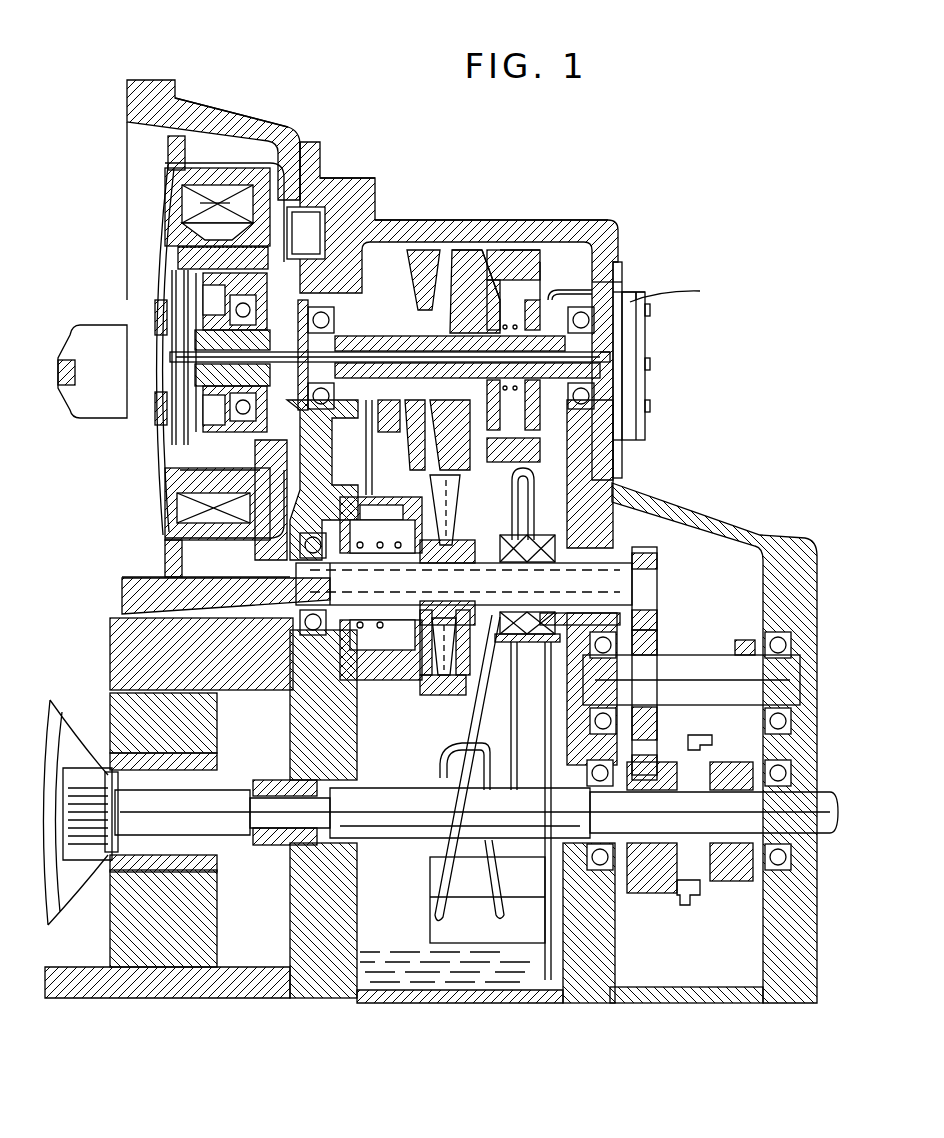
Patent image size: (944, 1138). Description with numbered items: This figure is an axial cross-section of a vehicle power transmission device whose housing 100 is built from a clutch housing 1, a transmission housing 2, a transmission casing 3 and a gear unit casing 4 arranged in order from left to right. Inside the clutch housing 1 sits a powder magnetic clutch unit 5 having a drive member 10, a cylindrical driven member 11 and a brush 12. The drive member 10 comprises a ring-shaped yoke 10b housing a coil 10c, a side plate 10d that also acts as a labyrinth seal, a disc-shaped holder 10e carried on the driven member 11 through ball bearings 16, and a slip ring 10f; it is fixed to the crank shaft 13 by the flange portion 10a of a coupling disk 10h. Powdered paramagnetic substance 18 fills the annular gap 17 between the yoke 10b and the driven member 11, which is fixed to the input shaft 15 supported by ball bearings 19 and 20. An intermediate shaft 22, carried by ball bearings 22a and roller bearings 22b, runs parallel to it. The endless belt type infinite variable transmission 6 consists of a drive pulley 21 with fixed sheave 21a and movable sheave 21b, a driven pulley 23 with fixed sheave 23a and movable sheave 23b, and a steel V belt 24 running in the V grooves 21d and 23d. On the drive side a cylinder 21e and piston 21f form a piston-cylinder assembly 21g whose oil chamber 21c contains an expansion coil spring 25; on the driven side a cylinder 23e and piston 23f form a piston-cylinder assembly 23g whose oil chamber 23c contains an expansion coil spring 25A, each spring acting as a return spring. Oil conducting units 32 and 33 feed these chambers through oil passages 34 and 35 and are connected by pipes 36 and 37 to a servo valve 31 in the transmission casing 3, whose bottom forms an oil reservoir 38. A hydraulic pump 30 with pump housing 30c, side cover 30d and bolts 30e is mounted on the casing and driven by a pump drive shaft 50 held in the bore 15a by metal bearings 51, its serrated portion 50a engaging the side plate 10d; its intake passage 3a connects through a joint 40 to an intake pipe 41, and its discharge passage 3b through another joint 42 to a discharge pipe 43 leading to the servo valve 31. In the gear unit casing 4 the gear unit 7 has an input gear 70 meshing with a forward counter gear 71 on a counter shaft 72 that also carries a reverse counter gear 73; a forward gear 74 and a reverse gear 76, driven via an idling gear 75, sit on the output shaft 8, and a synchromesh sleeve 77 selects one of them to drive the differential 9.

The clutch housing 1 is at (189, 110).
The transmission housing 2 is at (345, 220).
The transmission casing 3 is at (617, 258).
The intake passage 3a is at (617, 432).
The discharge passage 3b is at (624, 296).
The gear unit casing 4 is at (805, 662).
The clutch unit 5 is at (240, 157).
The endless belt type infinite variable transmission 6 is at (592, 480).
The gear unit 7 is at (707, 611).
The output shaft 8 is at (400, 838).
The differential 9 is at (75, 706).
The drive member 10 is at (200, 182).
The flange portion 10a is at (168, 150).
The ring-shaped yoke 10b is at (172, 195).
The coil 10c is at (195, 203).
The side plate 10d is at (172, 275).
The holder 10e is at (310, 205).
The slip ring 10f is at (385, 240).
The coupling disk 10h is at (160, 284).
The driven member 11 is at (182, 250).
The brush 12 is at (308, 232).
The crank shaft 13 is at (102, 320).
The input shaft 15 is at (200, 410).
The bore 15a is at (336, 330).
The ball bearings 16 is at (236, 305).
The annular gap 17 is at (178, 492).
The powdered paramagnetic substance 18 is at (180, 510).
The ball bearing 19 is at (372, 455).
The ball bearing 20 is at (625, 378).
The drive pulley 21 is at (431, 298).
The fixed sheave 21a is at (432, 260).
The movable sheave 21b is at (472, 260).
The oil chamber 21c is at (600, 284).
The V groove 21d is at (460, 258).
The cylinder 21e is at (541, 275).
The piston 21f is at (566, 272).
The piston-cylinder assembly 21g is at (510, 258).
The intermediate shaft 22 is at (657, 583).
The ball bearings 22a is at (285, 640).
The roller bearings 22b is at (622, 502).
The driven pulley 23 is at (447, 705).
The fixed sheave 23a is at (485, 715).
The movable sheave 23b is at (440, 748).
The oil chamber 23c is at (301, 814).
The V groove 23d is at (460, 740).
The cylinder 23e is at (458, 502).
The piston 23f is at (352, 584).
The piston-cylinder assembly 23g is at (265, 522).
The steel V belt 24 is at (513, 290).
The expansion coil spring 25 is at (513, 421).
The expansion coil spring 25A is at (407, 640).
The hydraulic pump 30 is at (634, 348).
The pump housing 30c is at (640, 300).
The side cover 30d is at (678, 285).
The bolts 30e is at (650, 310).
The servo valve 31 is at (496, 945).
The oil conducting unit 32 is at (352, 292).
The oil conducting unit 33 is at (464, 584).
The oil passage 34 is at (437, 435).
The oil passage 35 is at (441, 510).
The pipe 36 is at (395, 700).
The pipe 37 is at (527, 768).
The oil reservoir 38 is at (425, 985).
The joint 40 is at (562, 452).
The intake pipe 41 is at (546, 978).
The joint 42 is at (616, 288).
The discharge pipe 43 is at (500, 668).
The pump drive shaft 50 is at (200, 362).
The serrated portion 50a is at (200, 350).
The metal bearings 51 is at (200, 390).
The input gear 70 is at (652, 625).
The forward counter gear 71 is at (655, 650).
The counter shaft 72 is at (697, 672).
The reverse counter gear 73 is at (745, 640).
The forward gear 74 is at (648, 893).
The idling gear 75 is at (718, 748).
The reverse gear 76 is at (740, 885).
The sleeve 77 is at (698, 893).
The housing 100 is at (373, 170).